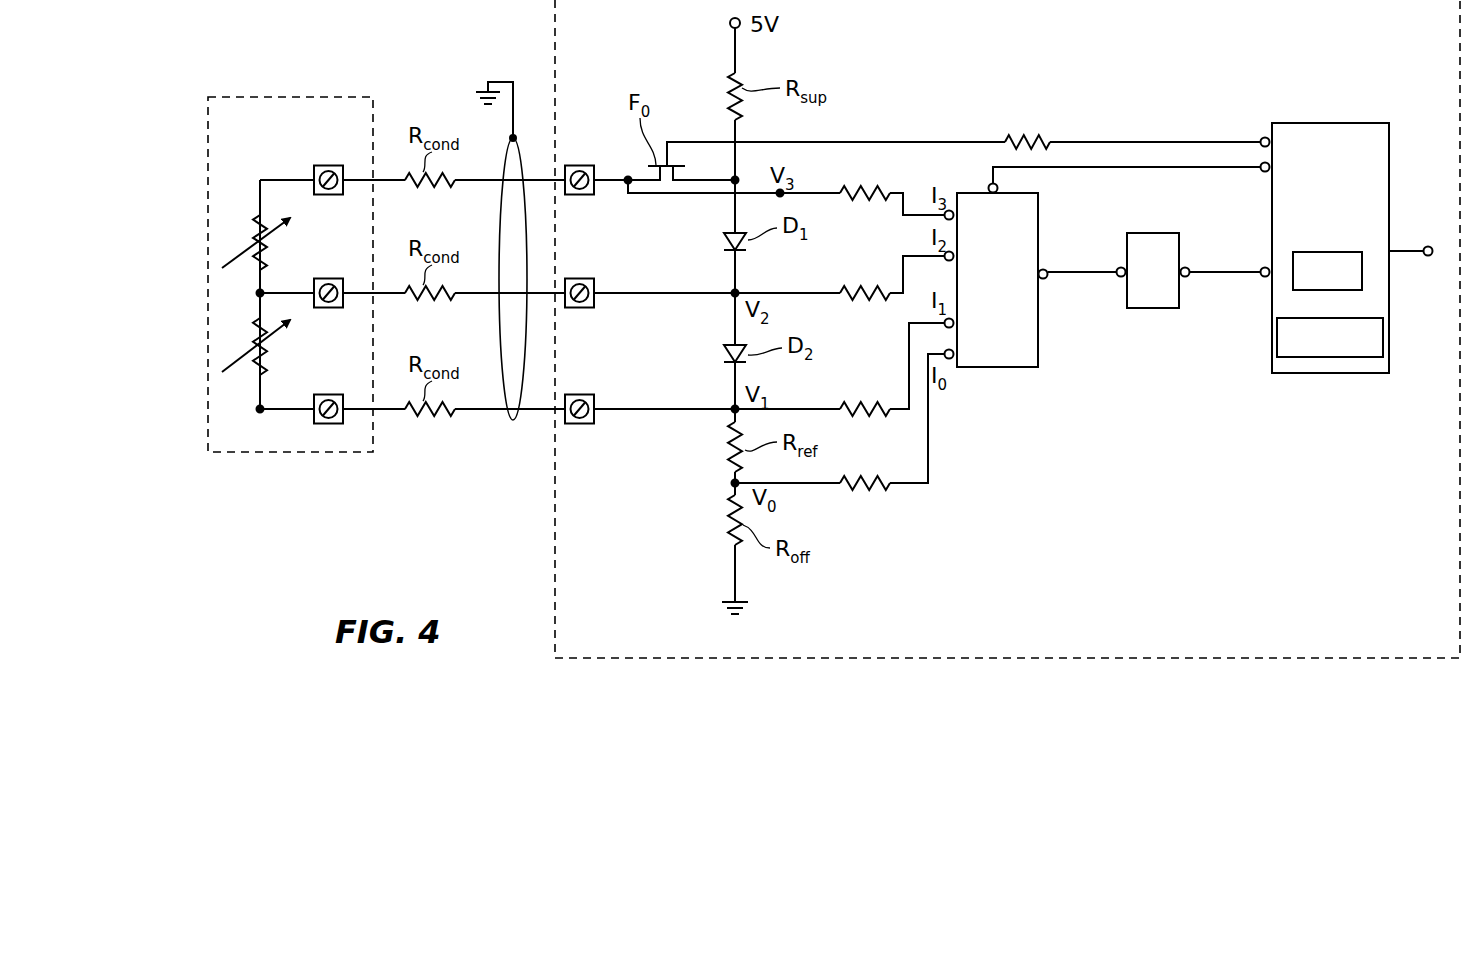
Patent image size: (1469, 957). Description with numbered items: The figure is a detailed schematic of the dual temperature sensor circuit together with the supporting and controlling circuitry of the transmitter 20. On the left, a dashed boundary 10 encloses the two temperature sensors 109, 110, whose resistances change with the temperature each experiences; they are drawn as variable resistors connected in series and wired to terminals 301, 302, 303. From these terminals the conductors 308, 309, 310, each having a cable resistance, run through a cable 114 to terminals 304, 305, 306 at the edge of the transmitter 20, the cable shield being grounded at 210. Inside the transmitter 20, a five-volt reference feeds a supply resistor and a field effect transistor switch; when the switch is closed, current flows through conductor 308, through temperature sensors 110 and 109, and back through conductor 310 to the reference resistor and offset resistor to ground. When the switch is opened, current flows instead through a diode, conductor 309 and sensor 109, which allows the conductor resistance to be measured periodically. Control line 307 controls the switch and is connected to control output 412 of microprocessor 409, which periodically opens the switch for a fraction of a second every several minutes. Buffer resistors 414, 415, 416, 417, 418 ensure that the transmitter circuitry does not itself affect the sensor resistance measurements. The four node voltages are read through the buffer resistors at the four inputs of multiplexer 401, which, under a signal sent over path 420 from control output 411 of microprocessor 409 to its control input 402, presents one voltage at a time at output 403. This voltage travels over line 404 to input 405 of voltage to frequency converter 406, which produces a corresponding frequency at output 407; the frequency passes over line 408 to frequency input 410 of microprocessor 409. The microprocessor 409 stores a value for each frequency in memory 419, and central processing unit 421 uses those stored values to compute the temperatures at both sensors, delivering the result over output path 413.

The sensor module 10 is at (313, 452).
The transmitter 20 is at (1215, 658).
The temperature sensor 109 is at (258, 335).
The temperature sensor 110 is at (258, 228).
The cable 114 is at (500, 228).
The cable shield ground 210 is at (513, 80).
The terminal 301 is at (324, 163).
The terminal 302 is at (340, 278).
The terminal 303 is at (333, 395).
The terminal 304 is at (575, 163).
The terminal 305 is at (578, 278).
The terminal 306 is at (578, 394).
The control line 307 is at (843, 142).
The conductor 308 is at (383, 183).
The conductor 309 is at (383, 296).
The conductor 310 is at (383, 412).
The multiplexer 401 is at (993, 367).
The control input 402 is at (990, 184).
The output 403 is at (1048, 277).
The line 404 is at (1095, 270).
The input 405 is at (1121, 280).
The voltage to frequency converter 406 is at (1160, 310).
The output 407 is at (1188, 265).
The line 408 is at (1225, 275).
The microprocessor 409 is at (1290, 375).
The frequency input 410 is at (1261, 268).
The control output 411 is at (1265, 174).
The control output 412 is at (1262, 138).
The path 413 is at (1400, 255).
The buffer resistor 414 is at (1040, 138).
The buffer resistor 415 is at (862, 204).
The buffer resistor 416 is at (865, 303).
The buffer resistor 417 is at (868, 418).
The buffer resistor 418 is at (865, 493).
The memory 419 is at (1360, 357).
The path 420 is at (1155, 166).
The central processing unit 421 is at (1335, 252).